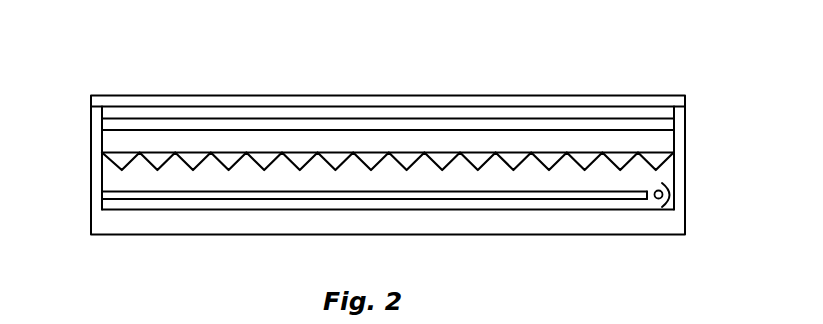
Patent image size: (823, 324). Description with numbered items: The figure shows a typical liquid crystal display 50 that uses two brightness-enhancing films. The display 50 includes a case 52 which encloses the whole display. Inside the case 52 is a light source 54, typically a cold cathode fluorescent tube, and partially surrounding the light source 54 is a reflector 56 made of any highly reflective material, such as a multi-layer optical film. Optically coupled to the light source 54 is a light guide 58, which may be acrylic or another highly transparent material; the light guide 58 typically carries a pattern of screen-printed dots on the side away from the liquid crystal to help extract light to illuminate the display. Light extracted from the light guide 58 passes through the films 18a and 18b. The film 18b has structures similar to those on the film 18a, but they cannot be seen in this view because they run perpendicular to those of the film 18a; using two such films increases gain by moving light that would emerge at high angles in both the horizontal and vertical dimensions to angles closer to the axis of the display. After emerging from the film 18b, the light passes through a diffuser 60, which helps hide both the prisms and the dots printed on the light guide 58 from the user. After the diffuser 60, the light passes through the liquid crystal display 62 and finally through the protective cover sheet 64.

The display 50 is at (650, 60).
The case 52 is at (595, 223).
The light source 54 is at (663, 208).
The reflector 56 is at (667, 194).
The light guide 58 is at (110, 197).
The diffuser 60 is at (112, 125).
The liquid crystal display 62 is at (113, 111).
The protective cover sheet 64 is at (218, 102).
The film 18a is at (661, 160).
The film 18b is at (667, 142).